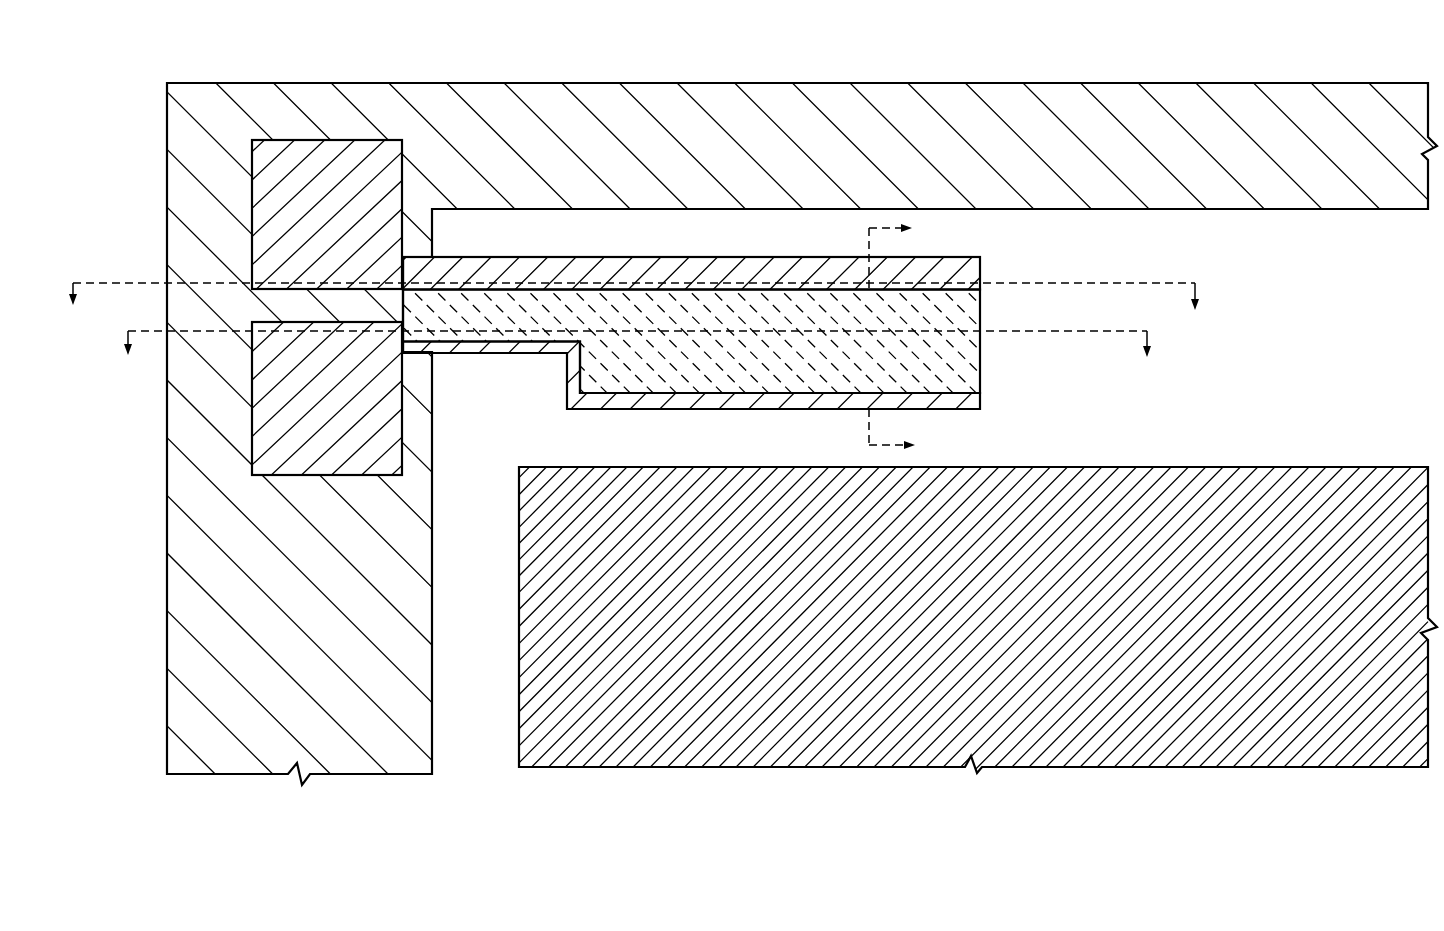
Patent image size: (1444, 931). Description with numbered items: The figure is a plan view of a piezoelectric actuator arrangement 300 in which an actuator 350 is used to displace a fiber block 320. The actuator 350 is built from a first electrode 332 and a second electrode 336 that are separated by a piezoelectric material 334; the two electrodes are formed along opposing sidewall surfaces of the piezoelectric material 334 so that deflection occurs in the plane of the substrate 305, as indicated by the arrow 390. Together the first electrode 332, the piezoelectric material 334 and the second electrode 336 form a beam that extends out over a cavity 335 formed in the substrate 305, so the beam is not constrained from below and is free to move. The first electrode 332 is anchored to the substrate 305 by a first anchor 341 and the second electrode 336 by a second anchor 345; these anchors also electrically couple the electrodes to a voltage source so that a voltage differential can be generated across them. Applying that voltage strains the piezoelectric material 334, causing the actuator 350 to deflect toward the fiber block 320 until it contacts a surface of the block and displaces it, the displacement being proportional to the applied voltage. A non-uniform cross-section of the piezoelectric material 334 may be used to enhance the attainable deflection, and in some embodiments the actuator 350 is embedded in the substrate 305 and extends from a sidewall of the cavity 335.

The MEMS device 300 is at (275, 43).
The substrate 305 is at (1284, 144).
The fiber block 320 is at (859, 640).
The first electrode 332 is at (504, 349).
The piezoelectric material 334 is at (751, 373).
The cavity 335 is at (1150, 242).
The second electrode 336 is at (642, 270).
The first anchor 341 is at (301, 416).
The second anchor 345 is at (307, 220).
The actuator 350 is at (711, 322).
The arrow 390 is at (987, 410).